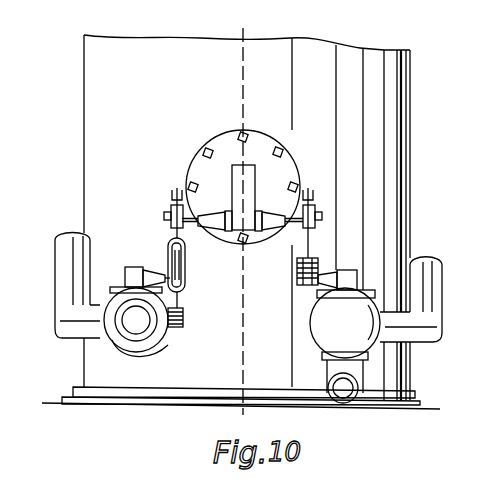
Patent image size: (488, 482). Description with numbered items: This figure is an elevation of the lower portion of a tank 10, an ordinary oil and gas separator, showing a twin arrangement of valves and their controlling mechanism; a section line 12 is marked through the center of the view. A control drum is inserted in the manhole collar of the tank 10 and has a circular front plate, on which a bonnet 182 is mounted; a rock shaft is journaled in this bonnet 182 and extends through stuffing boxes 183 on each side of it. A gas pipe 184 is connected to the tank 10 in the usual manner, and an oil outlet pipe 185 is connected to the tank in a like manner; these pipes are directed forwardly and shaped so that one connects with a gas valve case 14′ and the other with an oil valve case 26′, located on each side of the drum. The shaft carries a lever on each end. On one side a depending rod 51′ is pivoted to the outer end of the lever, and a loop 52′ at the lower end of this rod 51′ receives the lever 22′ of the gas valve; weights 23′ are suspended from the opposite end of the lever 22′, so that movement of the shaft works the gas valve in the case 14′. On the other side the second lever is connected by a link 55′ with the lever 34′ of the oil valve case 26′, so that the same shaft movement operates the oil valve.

The tank 10 is at (398, 76).
The section line 12 is at (224, 21).
The bonnet 182 is at (250, 172).
The stuffing boxes 183 is at (263, 233).
The gas pipe 184 is at (63, 281).
The oil outlet pipe 185 is at (443, 288).
The gas valve case 14′ is at (147, 349).
The oil valve case 26′ is at (320, 328).
The depending rod 51′ is at (170, 229).
The lever of the gas valve 22′ is at (185, 260).
The loop 52′ is at (186, 283).
The weights 23′ is at (184, 318).
The link 55′ is at (314, 248).
The lever of the oil valve case 34′ is at (318, 265).